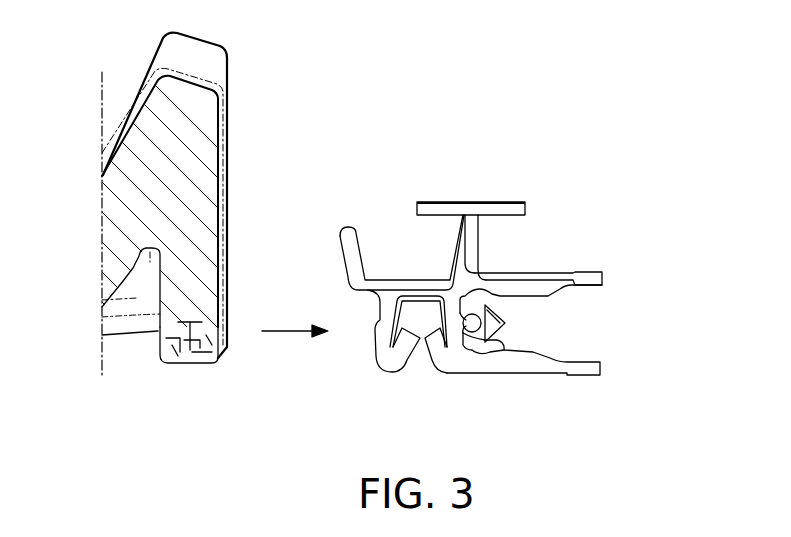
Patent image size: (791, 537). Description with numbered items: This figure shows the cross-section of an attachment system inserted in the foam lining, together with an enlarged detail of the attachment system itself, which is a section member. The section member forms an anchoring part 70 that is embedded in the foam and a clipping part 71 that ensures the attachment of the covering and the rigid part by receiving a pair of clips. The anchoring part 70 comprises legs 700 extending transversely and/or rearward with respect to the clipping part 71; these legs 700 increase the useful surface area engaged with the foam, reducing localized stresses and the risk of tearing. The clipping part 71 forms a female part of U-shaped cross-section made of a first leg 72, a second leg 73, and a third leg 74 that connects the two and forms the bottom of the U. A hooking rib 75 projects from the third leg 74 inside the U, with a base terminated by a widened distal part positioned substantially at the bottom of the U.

The legs 700 is at (445, 223).
The anchoring part 70 is at (503, 250).
The clipping part 71 is at (523, 313).
The first leg 72 is at (587, 278).
The second leg 73 is at (548, 365).
The third leg 74 is at (455, 332).
The hooking rib 75 is at (490, 322).